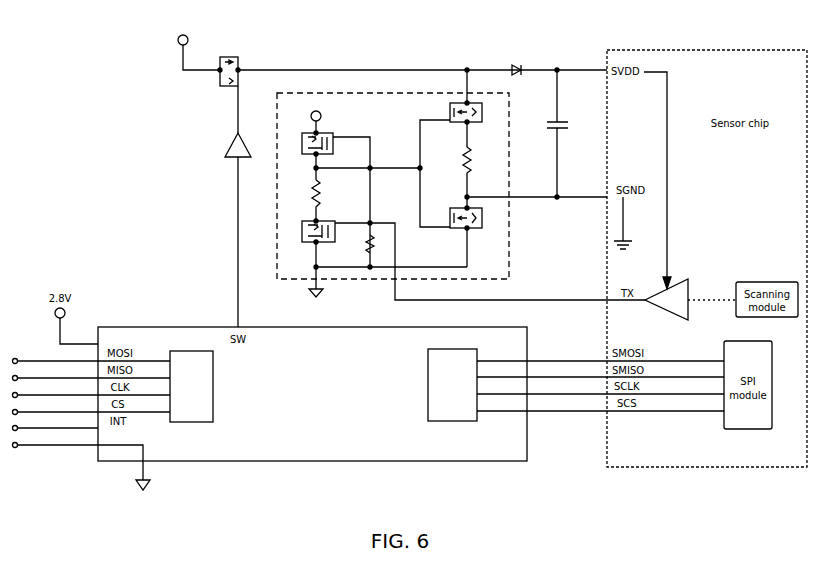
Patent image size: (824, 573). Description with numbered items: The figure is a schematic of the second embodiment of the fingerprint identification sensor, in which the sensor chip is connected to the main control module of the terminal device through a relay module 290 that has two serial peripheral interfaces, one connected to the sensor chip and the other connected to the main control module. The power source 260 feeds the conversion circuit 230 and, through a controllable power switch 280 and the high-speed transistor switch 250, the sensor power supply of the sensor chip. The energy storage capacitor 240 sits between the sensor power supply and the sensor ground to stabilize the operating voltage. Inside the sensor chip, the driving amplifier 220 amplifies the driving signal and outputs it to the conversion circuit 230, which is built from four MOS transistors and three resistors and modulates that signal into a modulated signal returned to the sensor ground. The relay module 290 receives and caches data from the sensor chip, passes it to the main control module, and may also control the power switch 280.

The driving amplifier 220 is at (688, 279).
The conversion circuit 230 is at (374, 92).
The energy storage capacitor 240 is at (566, 120).
The high-speed transistor switch 250 is at (518, 64).
The power source 260 is at (170, 46).
The power switch 280 is at (244, 63).
The relay module 290 is at (176, 327).